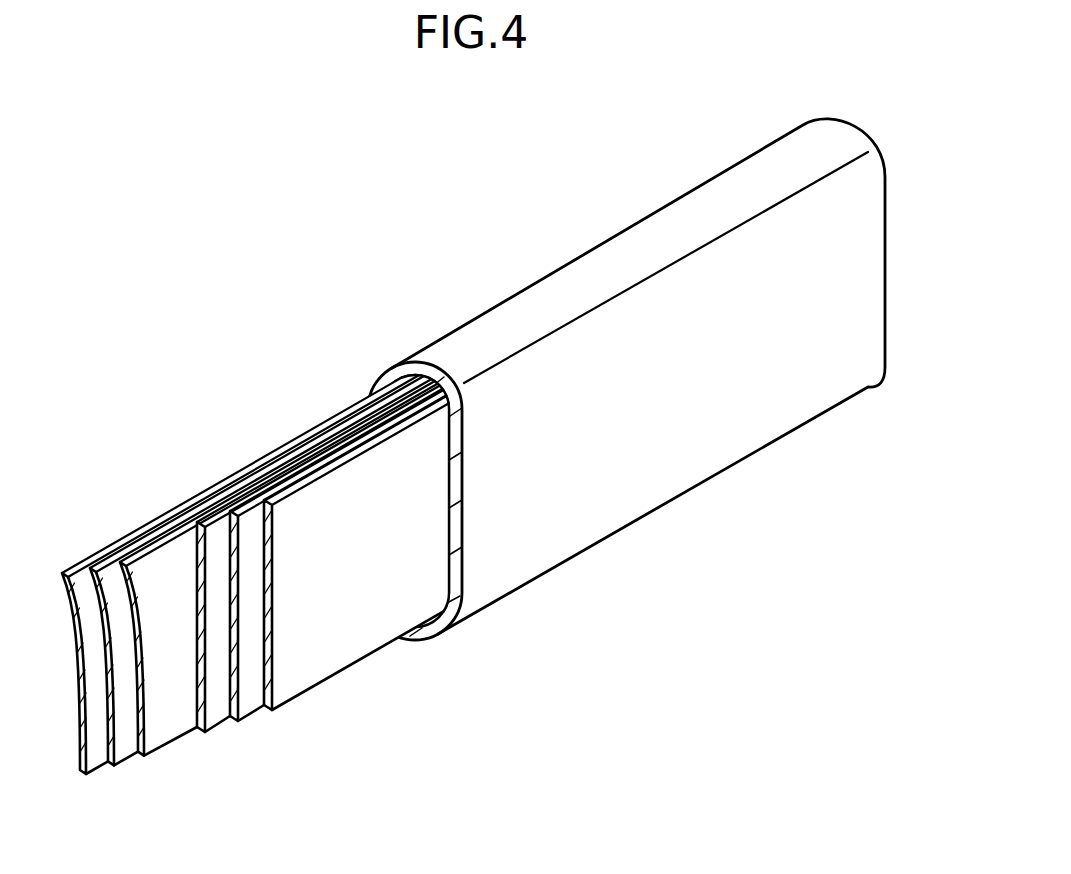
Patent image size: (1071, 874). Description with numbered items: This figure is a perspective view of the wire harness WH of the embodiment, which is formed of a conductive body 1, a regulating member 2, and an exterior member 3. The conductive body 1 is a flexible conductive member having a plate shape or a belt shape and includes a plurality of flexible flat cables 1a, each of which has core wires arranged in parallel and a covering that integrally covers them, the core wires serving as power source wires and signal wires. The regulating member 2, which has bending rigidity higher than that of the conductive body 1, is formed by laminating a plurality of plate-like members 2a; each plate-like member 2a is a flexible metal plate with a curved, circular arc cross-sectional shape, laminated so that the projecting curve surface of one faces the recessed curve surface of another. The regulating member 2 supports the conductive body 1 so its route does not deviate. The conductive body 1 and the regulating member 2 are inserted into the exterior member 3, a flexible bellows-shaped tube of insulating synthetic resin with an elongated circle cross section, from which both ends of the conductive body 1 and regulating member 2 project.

The wire harness WH is at (442, 262).
The exterior member 3 is at (610, 260).
The regulating member 2 is at (68, 448).
The plate-like member 2a is at (167, 534).
The conductive body 1 is at (197, 820).
The flexible flat cable 1a is at (219, 725).